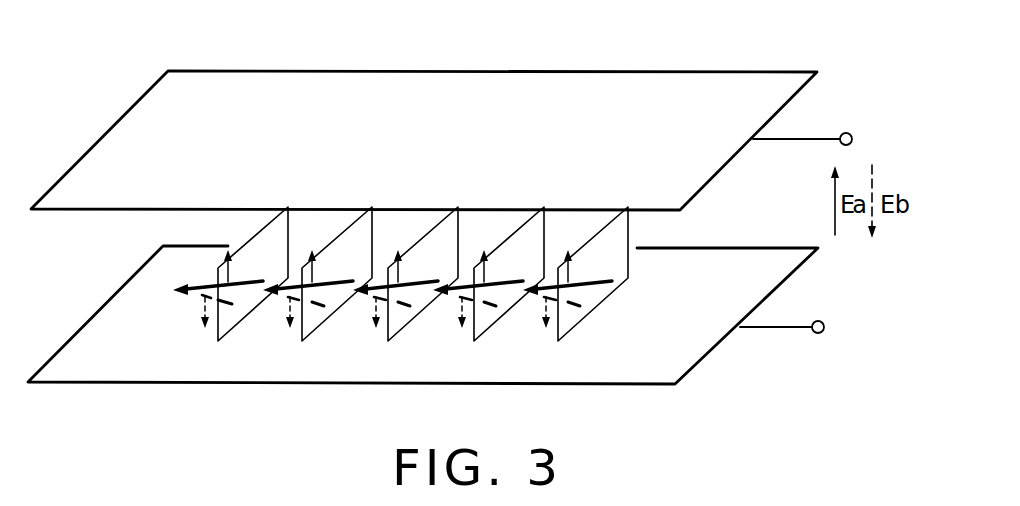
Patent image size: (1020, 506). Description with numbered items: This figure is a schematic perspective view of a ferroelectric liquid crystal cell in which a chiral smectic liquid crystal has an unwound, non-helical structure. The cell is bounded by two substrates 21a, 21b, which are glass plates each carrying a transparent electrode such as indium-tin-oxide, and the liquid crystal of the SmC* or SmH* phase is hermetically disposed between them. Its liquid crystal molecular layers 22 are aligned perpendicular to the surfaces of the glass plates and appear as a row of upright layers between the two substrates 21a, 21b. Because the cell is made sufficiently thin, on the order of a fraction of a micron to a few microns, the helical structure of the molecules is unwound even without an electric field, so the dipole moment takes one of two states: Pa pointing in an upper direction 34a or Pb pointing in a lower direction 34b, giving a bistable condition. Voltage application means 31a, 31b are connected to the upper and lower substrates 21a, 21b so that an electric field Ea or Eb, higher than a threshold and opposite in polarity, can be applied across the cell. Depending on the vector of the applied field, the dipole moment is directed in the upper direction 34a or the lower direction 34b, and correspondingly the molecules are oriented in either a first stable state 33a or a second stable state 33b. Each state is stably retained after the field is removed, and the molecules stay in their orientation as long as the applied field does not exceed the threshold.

The substrate 21a is at (733, 88).
The substrate 21b is at (775, 275).
The liquid crystal molecular layers 22 is at (627, 238).
The voltage application means 31a is at (851, 134).
The voltage application means 31b is at (823, 333).
The first stable state 33a is at (254, 280).
The second stable state 33b is at (232, 306).
The upper direction 34a is at (225, 258).
The lower direction 34b is at (205, 304).